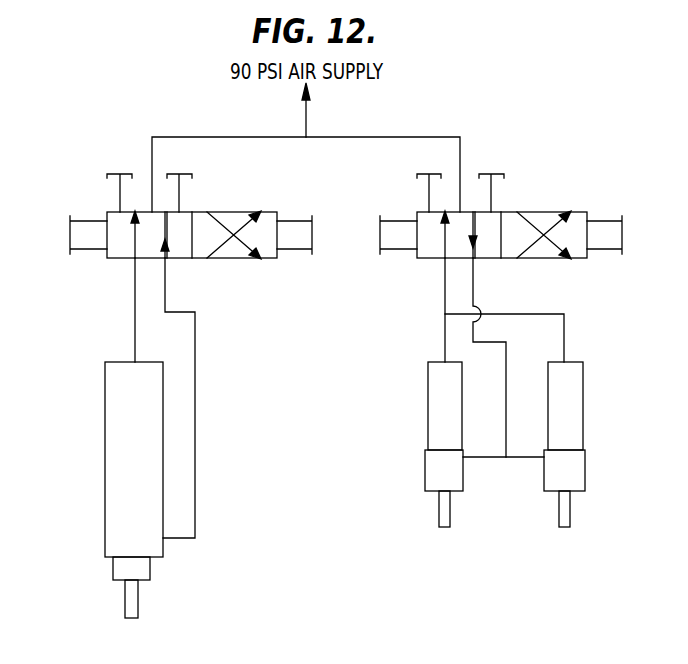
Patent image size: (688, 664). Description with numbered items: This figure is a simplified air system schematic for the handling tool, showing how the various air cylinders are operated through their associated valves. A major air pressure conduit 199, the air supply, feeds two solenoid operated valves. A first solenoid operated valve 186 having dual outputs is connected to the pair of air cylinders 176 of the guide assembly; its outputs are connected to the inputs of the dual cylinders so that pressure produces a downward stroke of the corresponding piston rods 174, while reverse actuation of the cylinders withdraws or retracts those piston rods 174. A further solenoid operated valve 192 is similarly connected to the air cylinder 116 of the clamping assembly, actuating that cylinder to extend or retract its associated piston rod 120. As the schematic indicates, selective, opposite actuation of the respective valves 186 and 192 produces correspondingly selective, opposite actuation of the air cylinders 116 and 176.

The air cylinder 116 is at (108, 386).
The piston rod 120 is at (139, 595).
The piston rods 174 is at (559, 512).
The pair of air cylinders 176 is at (546, 429).
The first solenoid operated valve 186 is at (536, 213).
The solenoid operated valve 192 is at (144, 211).
The major air pressure conduit 199 is at (307, 120).